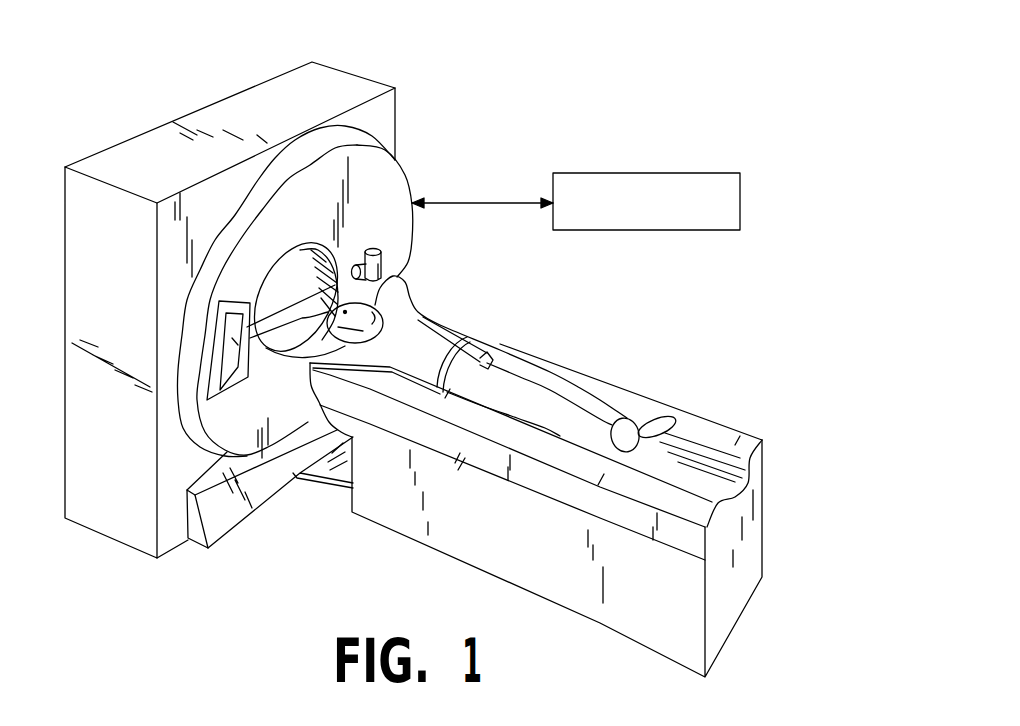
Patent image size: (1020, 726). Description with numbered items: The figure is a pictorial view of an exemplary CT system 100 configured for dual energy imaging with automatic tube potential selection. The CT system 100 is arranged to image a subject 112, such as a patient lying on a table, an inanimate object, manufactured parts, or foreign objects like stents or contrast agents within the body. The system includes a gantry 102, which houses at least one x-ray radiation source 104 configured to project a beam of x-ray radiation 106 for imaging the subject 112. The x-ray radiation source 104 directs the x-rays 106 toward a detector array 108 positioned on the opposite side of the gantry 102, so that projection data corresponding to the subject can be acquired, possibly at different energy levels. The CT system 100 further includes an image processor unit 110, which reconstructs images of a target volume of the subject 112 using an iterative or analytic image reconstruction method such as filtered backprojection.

The CT system 100 is at (687, 45).
The gantry 102 is at (392, 206).
The x-ray radiation source 104 is at (383, 265).
The beam of x-ray radiation 106 is at (277, 318).
The detector array 108 is at (231, 378).
The image processor unit 110 is at (700, 173).
The subject 112 is at (426, 330).